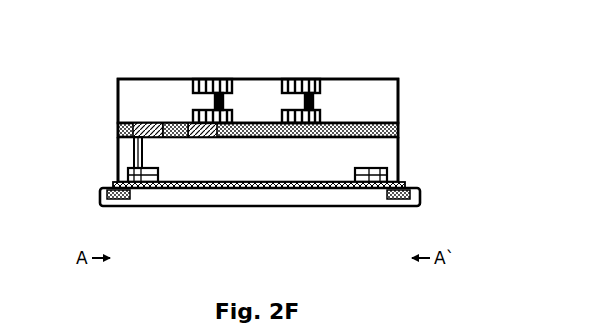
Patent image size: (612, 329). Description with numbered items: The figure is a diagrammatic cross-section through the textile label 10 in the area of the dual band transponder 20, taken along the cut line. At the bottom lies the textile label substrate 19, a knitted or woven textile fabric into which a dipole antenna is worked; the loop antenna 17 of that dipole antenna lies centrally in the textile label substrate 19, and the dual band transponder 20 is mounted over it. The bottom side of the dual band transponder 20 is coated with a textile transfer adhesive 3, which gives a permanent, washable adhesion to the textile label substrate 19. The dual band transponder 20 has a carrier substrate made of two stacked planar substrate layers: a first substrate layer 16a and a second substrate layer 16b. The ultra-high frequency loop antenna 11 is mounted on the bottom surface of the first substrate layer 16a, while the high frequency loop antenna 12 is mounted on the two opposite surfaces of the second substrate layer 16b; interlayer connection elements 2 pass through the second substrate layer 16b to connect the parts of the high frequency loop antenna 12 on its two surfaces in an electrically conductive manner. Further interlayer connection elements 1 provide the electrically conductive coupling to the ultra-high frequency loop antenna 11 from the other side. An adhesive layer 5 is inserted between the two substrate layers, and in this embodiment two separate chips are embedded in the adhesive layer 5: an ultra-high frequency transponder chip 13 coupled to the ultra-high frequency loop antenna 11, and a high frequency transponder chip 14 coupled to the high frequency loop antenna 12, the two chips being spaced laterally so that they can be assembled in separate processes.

The textile label 10 is at (88, 46).
The dual band transponder 20 is at (363, 68).
The second substrate layer 16b is at (398, 83).
The interlayer connection elements 2 is at (313, 102).
The adhesive layer 5 is at (398, 130).
The first substrate layer 16a is at (398, 160).
The ultra-high frequency transponder chip 13 is at (148, 123).
The high frequency transponder chip 14 is at (190, 123).
The high frequency loop antenna 12 is at (210, 78).
The interlayer connection elements 1 is at (134, 148).
The ultra-high frequency loop antenna 11 is at (128, 172).
The textile transfer adhesive 3 is at (113, 185).
The textile label substrate 19 is at (414, 206).
The loop antenna 17 is at (122, 200).